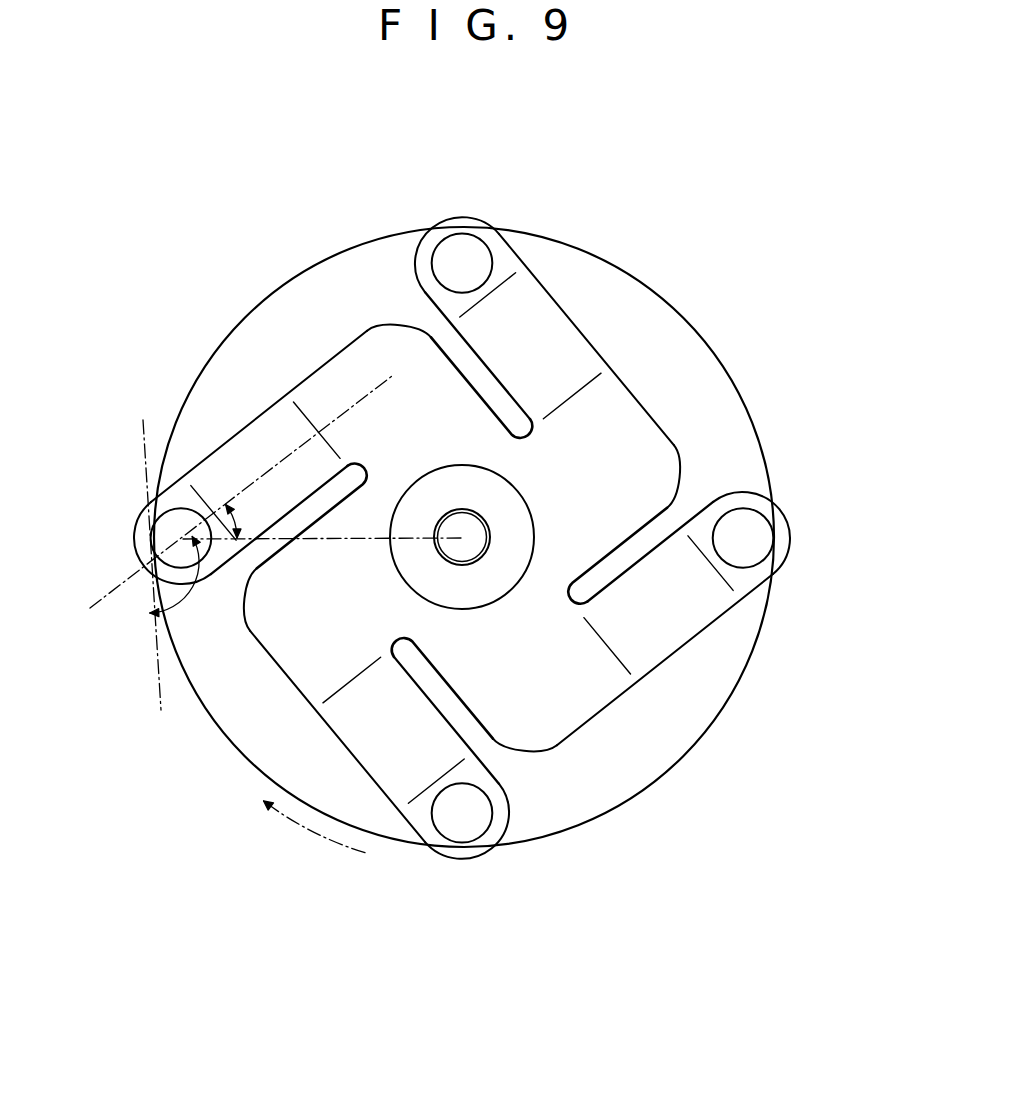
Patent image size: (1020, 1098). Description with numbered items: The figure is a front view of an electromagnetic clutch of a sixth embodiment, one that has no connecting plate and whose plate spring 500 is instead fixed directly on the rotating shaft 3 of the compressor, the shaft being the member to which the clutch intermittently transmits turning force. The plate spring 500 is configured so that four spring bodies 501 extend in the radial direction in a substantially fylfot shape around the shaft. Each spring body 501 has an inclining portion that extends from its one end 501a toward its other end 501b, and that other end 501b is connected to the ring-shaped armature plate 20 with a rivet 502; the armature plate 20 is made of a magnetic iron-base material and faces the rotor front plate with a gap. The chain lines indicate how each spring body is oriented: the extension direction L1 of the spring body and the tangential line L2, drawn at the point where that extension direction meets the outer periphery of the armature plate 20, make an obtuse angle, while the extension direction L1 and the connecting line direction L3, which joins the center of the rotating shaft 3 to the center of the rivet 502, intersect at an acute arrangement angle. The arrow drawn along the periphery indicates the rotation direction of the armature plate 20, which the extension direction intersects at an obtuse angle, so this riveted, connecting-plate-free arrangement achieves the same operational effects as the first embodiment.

The rotating shaft 3 is at (470, 533).
The armature plate 20 is at (686, 745).
The plate spring 500 is at (683, 392).
The spring body 501 is at (312, 382).
The one end 501a is at (390, 338).
The other end 501b is at (461, 218).
The rivet 502 is at (470, 245).
The extension direction L1 is at (104, 591).
The tangential line L2 is at (140, 452).
The connecting line direction L3 is at (326, 556).